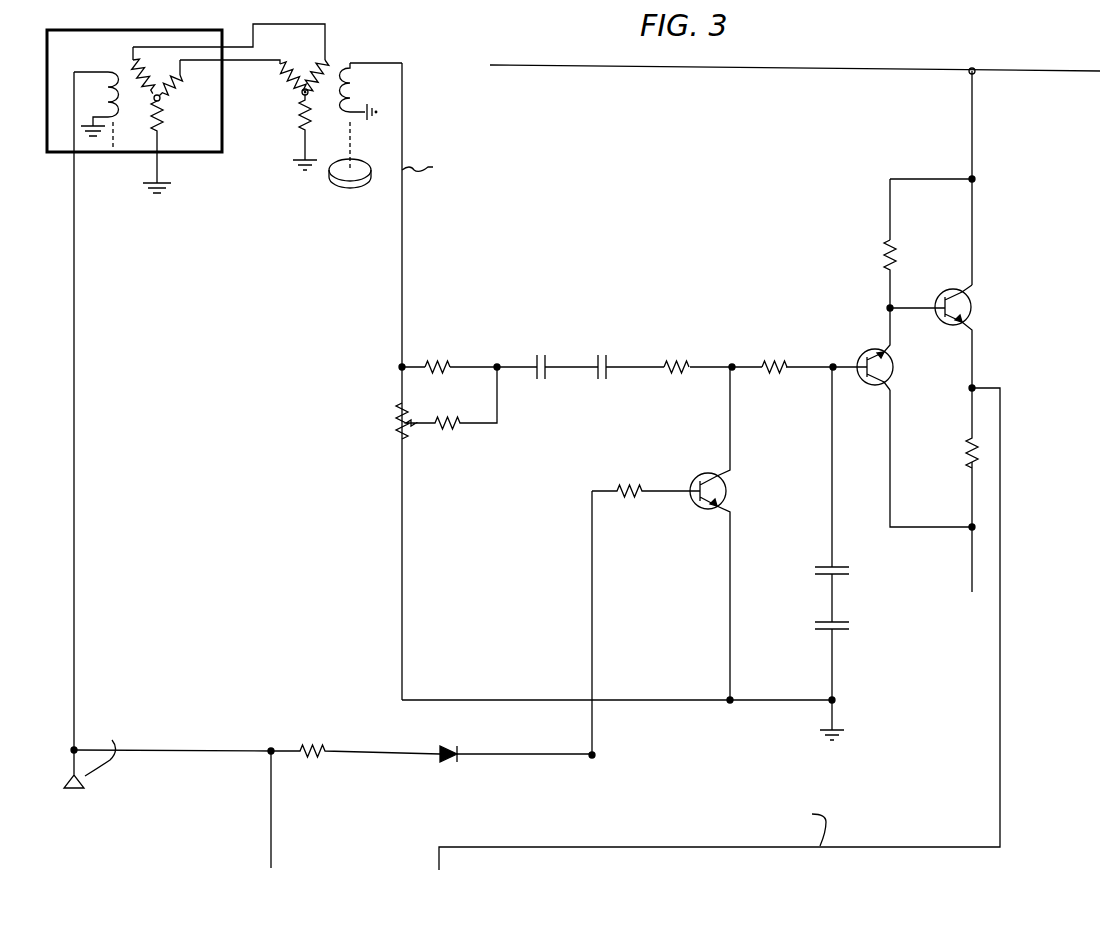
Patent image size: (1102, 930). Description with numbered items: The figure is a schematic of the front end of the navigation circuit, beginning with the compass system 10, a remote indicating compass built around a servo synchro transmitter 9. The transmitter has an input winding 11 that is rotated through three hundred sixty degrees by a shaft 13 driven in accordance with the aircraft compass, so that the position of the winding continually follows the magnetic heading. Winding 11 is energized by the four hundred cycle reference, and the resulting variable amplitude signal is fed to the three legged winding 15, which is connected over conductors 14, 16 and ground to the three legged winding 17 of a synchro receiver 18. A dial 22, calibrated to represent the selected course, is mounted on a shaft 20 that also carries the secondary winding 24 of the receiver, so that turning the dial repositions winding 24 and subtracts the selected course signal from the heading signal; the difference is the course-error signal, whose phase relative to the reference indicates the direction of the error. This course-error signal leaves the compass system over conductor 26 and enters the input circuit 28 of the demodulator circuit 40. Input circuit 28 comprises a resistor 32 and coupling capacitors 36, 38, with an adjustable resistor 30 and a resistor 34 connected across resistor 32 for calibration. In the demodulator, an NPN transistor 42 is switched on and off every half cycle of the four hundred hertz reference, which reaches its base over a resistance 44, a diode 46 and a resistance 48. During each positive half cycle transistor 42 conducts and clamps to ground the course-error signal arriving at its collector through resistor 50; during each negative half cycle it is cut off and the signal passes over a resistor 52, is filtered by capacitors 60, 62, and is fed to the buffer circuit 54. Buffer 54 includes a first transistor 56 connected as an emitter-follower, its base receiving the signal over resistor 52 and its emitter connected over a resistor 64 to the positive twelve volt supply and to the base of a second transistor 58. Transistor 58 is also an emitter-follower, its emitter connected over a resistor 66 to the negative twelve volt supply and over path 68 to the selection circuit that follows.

The compass system 10 is at (125, 77).
The input winding 11 is at (90, 70).
The shaft 13 is at (119, 124).
The conductor 14 is at (132, 44).
The three legged winding 15 is at (146, 72).
The conductor 16 is at (194, 70).
The servo synchro transmitter 9 is at (200, 111).
The three legged winding 17 is at (295, 132).
The synchro receiver 18 is at (339, 18).
The shaft 20 is at (360, 140).
The dial 22 is at (332, 182).
The secondary winding 24 is at (357, 89).
The conductor 26 is at (408, 52).
The input circuit 28 is at (575, 341).
The adjustable resistor 30 is at (398, 423).
The resistor 32 is at (438, 360).
The resistor 34 is at (468, 418).
The coupling capacitor 36 is at (546, 382).
The coupling capacitor 38 is at (597, 381).
The demodulator circuit 40 is at (628, 488).
The NPN transistor 42 is at (717, 472).
The resistance 44 is at (307, 748).
The diode 46 is at (451, 748).
The resistance 48 is at (638, 495).
The resistor 50 is at (673, 360).
The resistor 52 is at (788, 344).
The buffer circuit 54 is at (795, 334).
The first transistor 56 is at (880, 350).
The second transistor 58 is at (972, 304).
The capacitor 60 is at (812, 570).
The capacitor 62 is at (812, 629).
The resistor 64 is at (886, 252).
The resistor 66 is at (968, 456).
The path 68 is at (1002, 470).